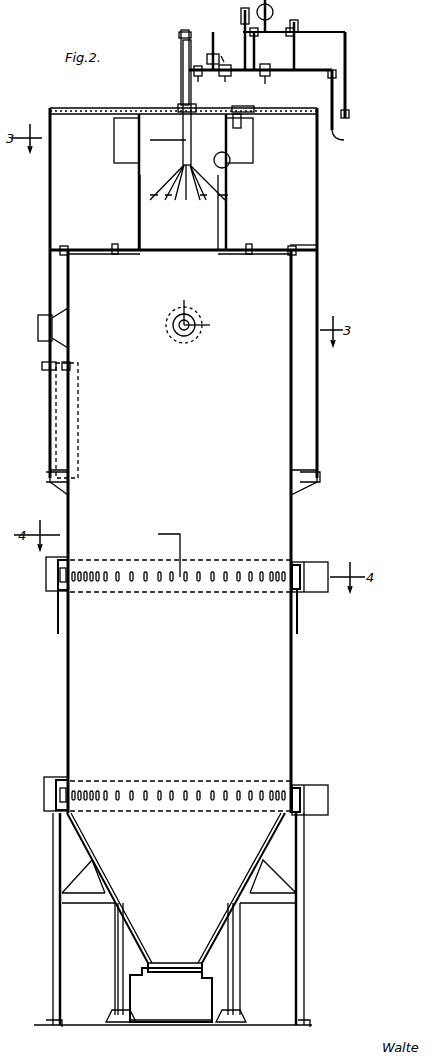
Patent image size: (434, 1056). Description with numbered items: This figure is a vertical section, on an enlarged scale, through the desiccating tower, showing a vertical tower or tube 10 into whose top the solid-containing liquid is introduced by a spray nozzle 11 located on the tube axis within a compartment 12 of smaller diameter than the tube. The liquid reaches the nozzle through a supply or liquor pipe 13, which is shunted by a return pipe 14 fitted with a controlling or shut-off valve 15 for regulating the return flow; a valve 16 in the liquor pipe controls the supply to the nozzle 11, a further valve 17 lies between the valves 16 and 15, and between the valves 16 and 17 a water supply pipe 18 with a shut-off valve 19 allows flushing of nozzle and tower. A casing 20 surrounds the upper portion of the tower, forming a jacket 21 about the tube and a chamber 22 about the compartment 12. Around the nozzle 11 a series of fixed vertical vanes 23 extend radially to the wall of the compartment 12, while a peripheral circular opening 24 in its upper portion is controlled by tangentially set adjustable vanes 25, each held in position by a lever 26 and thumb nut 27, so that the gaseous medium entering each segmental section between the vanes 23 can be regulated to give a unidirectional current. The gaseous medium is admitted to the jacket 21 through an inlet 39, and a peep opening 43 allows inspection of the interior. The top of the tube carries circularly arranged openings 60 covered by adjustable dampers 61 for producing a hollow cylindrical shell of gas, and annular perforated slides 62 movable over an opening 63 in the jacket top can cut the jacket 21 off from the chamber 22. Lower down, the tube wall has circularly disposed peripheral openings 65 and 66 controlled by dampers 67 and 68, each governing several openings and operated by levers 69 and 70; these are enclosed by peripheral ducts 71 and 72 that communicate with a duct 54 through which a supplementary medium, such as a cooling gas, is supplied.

The vertical tower or tube 10 is at (291, 538).
The spray nozzle 11 is at (186, 200).
The compartment 12 is at (228, 236).
The supply or liquor pipe 13 is at (181, 77).
The return pipe 14 is at (334, 138).
The controlling or shut-off valve 15 is at (265, 84).
The valve 16 is at (200, 80).
The valve 17 is at (228, 82).
The water supply pipe 18 is at (215, 40).
The shut-off valve 19 is at (207, 59).
The casing 20 is at (318, 215).
The surrounding chamber or jacket 21 is at (313, 404).
The chamber 22 is at (305, 246).
The fixed vertical vanes 23 is at (158, 200).
The peripheral and circular opening 24 is at (227, 165).
The adjustable vanes 25 is at (127, 155).
The lever 26 is at (240, 116).
The thumb nut 27 is at (250, 110).
The inlet 39 is at (78, 428).
The peep opening 43 is at (38, 328).
The duct 54 is at (322, 565).
The circularly arranged openings 60 is at (100, 256).
The adjustable dampers 61 is at (118, 254).
The annular and perforated slides or dampers 62 is at (62, 260).
The opening 63 is at (52, 260).
The peripheral openings 65 is at (117, 581).
The peripheral openings 66 is at (100, 800).
The dampers 67 is at (66, 575).
The dampers 68 is at (66, 795).
The lever 69 is at (58, 630).
The lever 70 is at (53, 835).
The peripheral duct 71 is at (50, 575).
The peripheral duct 72 is at (44, 795).